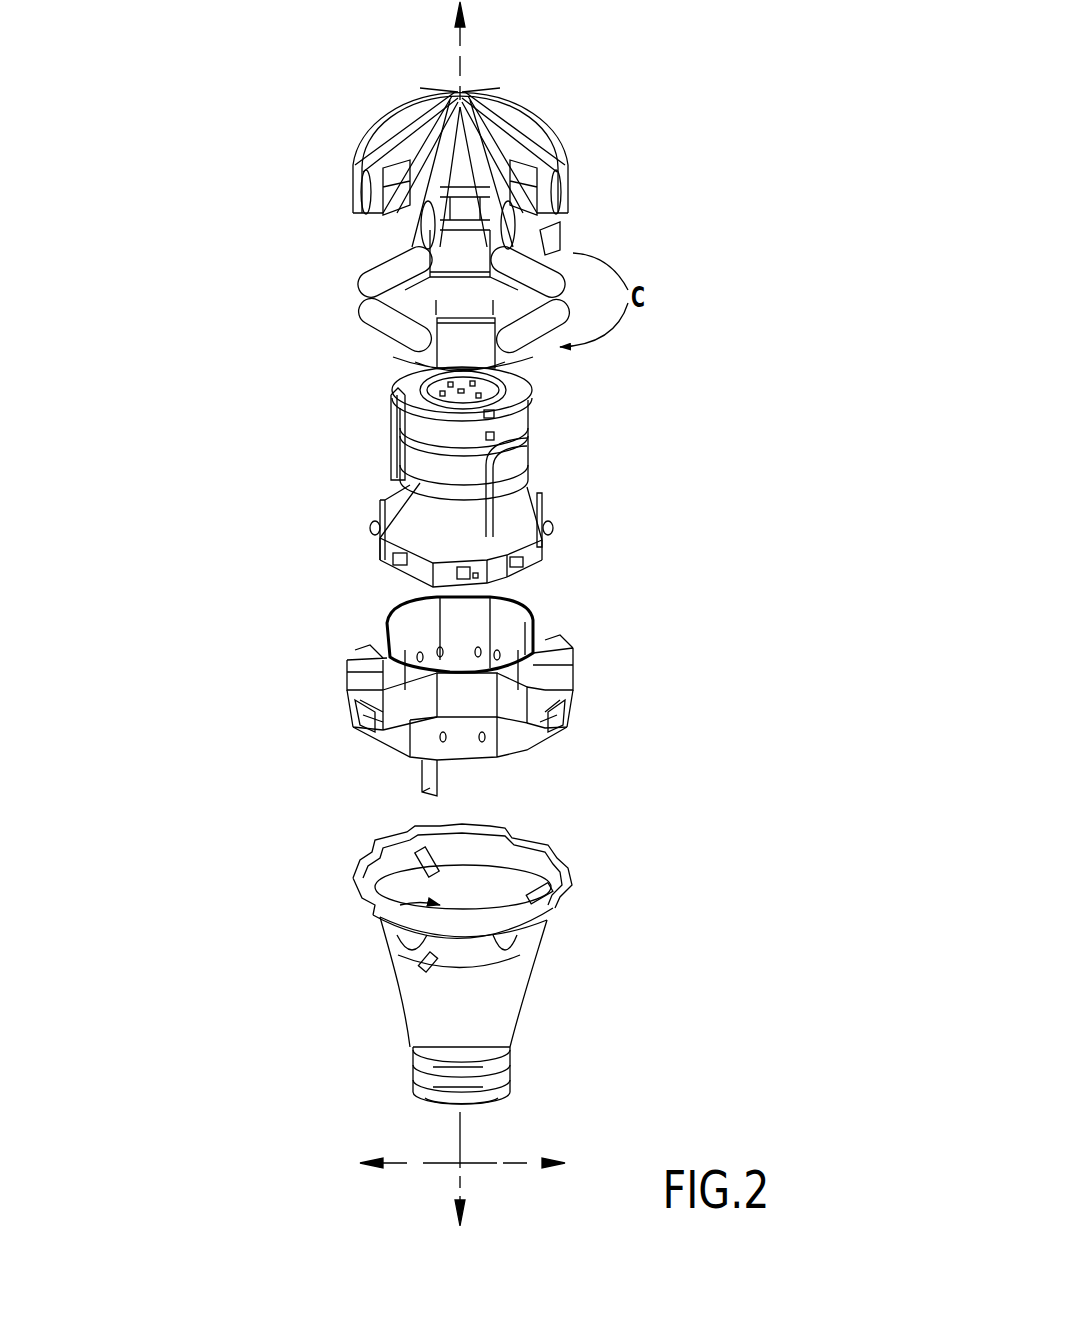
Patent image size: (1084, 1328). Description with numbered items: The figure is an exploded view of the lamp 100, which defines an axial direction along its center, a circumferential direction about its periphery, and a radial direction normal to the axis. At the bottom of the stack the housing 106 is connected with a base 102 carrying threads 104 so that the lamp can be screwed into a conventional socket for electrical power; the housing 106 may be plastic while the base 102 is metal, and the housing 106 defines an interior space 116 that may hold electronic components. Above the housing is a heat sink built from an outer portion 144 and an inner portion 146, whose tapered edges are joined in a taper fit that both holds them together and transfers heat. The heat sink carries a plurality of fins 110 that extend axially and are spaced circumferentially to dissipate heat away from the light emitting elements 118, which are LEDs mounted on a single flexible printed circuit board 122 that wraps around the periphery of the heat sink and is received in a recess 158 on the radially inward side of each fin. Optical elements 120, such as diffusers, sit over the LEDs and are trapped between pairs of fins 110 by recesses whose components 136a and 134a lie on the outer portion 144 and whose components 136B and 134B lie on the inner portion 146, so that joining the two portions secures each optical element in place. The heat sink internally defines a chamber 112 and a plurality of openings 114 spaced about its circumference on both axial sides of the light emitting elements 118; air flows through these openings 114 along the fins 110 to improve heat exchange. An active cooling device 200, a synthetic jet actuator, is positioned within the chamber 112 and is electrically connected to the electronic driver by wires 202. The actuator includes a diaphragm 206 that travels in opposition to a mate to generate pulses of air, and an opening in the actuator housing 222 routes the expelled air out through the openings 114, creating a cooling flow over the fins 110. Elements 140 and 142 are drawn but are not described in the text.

The lamp 100 is at (735, 212).
The base 102 is at (502, 1078).
The threads 104 is at (420, 1080).
The housing 106 is at (500, 1000).
The fins 110 is at (377, 130).
The chamber 112 is at (500, 592).
The openings 114 is at (404, 158).
The interior space 116 is at (385, 915).
The light emitting elements 118 is at (378, 532).
The optical elements 120 is at (370, 280).
The printed circuit board 122 is at (525, 497).
The recess component 134a is at (385, 242).
The recess component 134B is at (380, 708).
The recess component 136a is at (553, 160).
The recess component 136B is at (563, 710).
The alignment protrusion 140 is at (350, 168).
The tabs 142 is at (437, 860).
The outer portion 144 is at (330, 130).
The inner portion 146 is at (446, 415).
The recess 158 is at (540, 237).
The active cooling device 200 is at (462, 471).
The wires 202 is at (530, 495).
The diaphragm 206 is at (517, 390).
The housing 222 is at (413, 440).